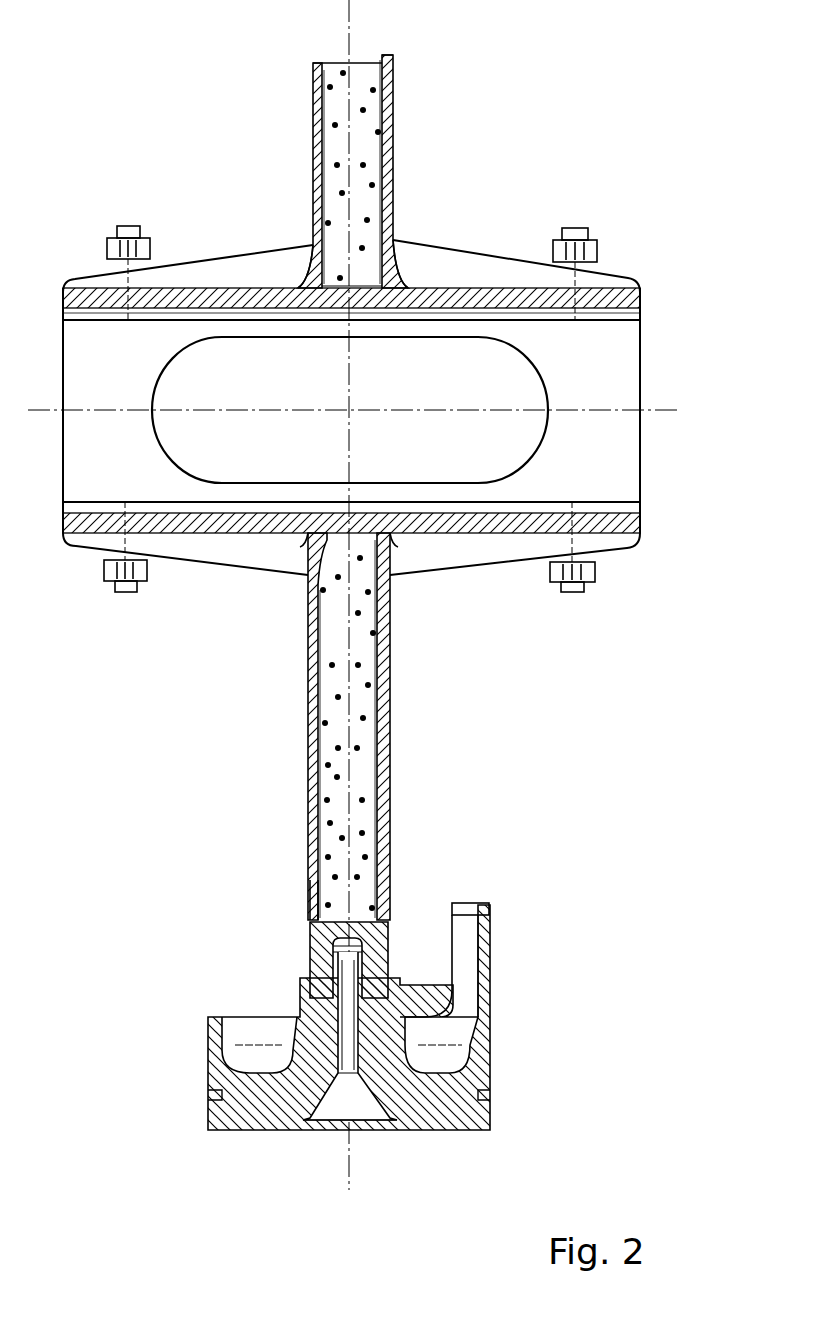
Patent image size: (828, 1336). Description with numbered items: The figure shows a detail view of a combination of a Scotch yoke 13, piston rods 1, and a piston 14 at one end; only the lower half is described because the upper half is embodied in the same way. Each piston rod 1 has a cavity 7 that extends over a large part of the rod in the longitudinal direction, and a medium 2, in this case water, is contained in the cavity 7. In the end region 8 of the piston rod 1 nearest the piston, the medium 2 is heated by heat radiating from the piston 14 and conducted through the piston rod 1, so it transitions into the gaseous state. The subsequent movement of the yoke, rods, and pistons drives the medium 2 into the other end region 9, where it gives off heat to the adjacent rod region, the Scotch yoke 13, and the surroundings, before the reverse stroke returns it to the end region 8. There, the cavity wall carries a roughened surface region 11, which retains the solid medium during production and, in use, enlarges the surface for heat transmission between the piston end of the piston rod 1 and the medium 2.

The piston rod 1 is at (312, 128).
The medium 2 is at (362, 110).
The cavity 7 is at (328, 205).
The end region 8 is at (360, 898).
The other end region 9 is at (362, 270).
The roughened surface region 11 is at (312, 895).
The Scotch yoke 13 is at (443, 273).
The piston 14 is at (210, 1050).